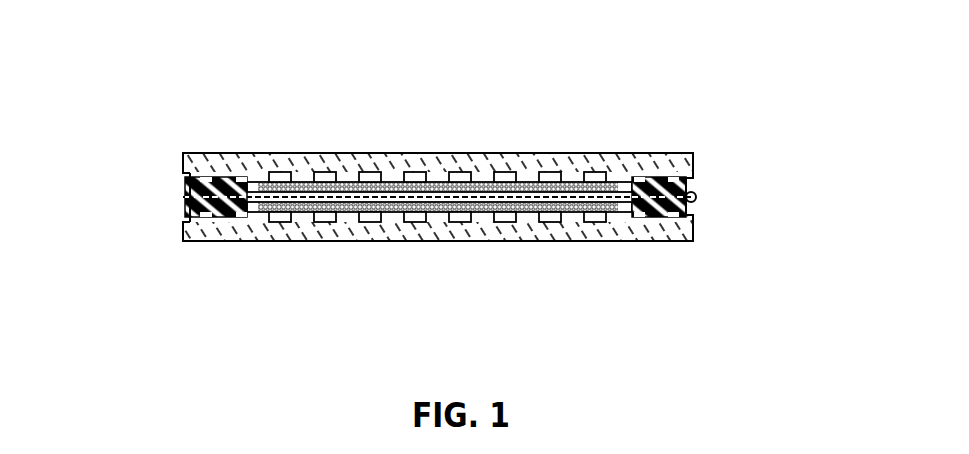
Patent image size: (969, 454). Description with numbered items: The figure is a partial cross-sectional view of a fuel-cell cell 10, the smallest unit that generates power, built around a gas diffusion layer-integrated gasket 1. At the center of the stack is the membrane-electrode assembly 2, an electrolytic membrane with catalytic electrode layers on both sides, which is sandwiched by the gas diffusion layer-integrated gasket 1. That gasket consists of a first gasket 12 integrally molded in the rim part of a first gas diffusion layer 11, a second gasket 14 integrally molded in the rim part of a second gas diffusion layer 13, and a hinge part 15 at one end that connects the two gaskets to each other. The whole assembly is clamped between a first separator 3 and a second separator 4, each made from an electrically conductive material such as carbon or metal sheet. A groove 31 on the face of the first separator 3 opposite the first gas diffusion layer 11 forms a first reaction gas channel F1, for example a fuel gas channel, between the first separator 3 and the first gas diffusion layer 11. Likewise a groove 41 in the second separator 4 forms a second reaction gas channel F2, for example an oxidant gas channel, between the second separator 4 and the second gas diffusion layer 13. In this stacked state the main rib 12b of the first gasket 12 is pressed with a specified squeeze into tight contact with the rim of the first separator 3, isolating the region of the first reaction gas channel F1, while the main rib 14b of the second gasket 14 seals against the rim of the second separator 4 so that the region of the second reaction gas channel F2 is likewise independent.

The fuel-cell cell 10 is at (235, 128).
The gas diffusion layer-integrated gasket 1 is at (183, 191).
The membrane-electrode assembly 2 is at (185, 198).
The first separator 3 is at (300, 157).
The second separator 4 is at (300, 238).
The first gas diffusion layer 11 is at (388, 183).
The second gas diffusion layer 13 is at (392, 213).
The first gasket 12 is at (217, 177).
The main rib 12b is at (648, 175).
The second gasket 14 is at (222, 220).
The main rib 14b is at (657, 220).
The hinge part 15 is at (702, 196).
The groove 31 is at (556, 172).
The groove 41 is at (557, 220).
The first reaction gas channel F1 is at (460, 172).
The second reaction gas channel F2 is at (462, 223).